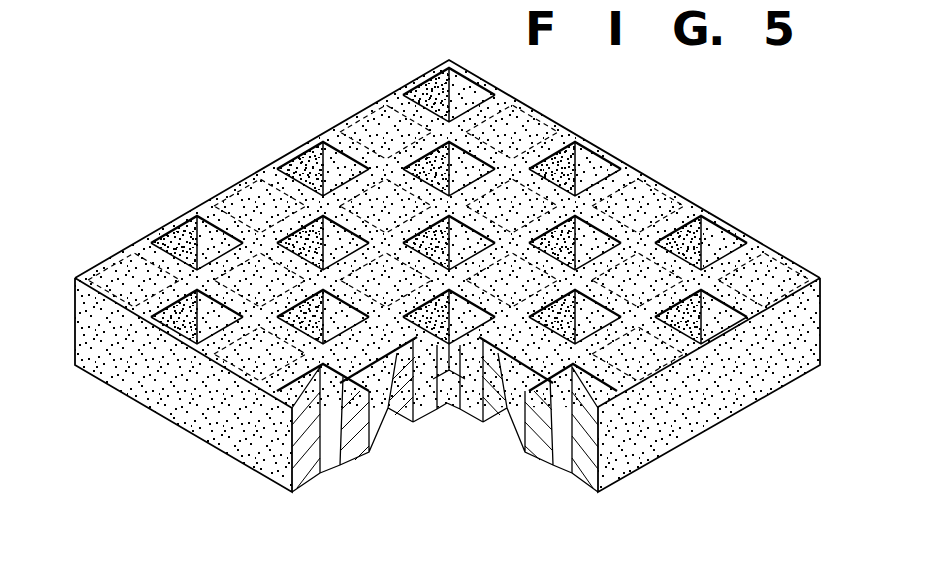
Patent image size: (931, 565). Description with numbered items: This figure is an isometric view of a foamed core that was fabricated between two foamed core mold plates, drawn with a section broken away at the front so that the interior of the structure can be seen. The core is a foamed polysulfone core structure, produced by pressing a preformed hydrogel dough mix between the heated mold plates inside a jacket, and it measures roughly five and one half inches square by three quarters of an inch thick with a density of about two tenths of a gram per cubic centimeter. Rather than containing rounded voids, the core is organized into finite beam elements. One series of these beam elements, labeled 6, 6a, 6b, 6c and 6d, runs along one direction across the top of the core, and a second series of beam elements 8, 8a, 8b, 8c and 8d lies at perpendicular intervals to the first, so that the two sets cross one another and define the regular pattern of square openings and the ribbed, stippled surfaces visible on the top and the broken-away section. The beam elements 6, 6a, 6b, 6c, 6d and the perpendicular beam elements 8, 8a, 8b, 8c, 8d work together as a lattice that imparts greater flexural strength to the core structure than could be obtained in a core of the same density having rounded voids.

The finite beam element 6 is at (752, 247).
The finite beam element 6a is at (688, 212).
The finite beam element 6b is at (627, 172).
The finite beam element 6c is at (568, 140).
The finite beam element 6d is at (505, 92).
The finite beam element 8 is at (140, 232).
The finite beam element 8a is at (217, 217).
The finite beam element 8b is at (270, 175).
The finite beam element 8c is at (340, 137).
The finite beam element 8d is at (395, 97).